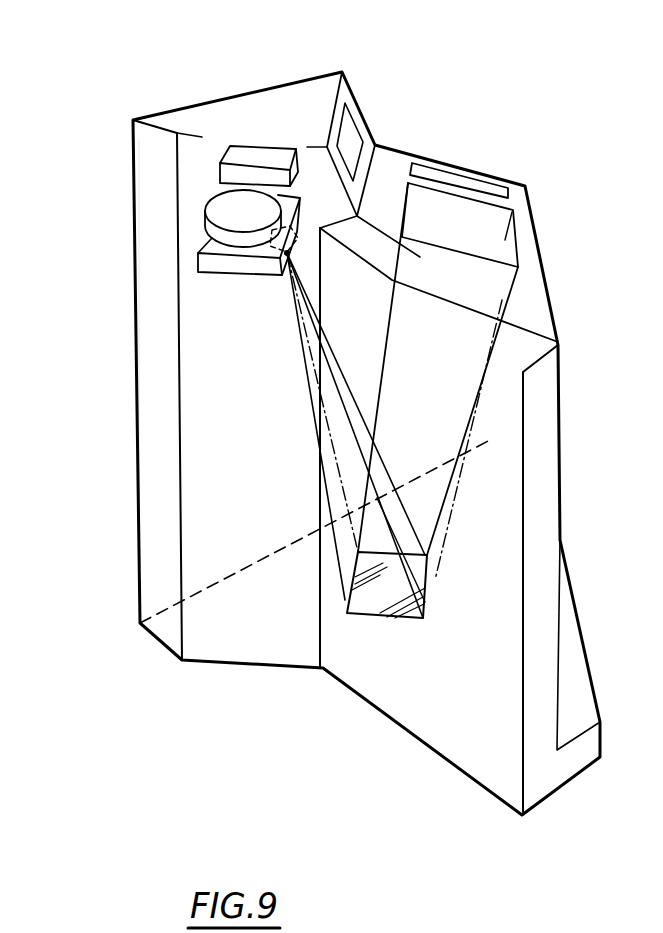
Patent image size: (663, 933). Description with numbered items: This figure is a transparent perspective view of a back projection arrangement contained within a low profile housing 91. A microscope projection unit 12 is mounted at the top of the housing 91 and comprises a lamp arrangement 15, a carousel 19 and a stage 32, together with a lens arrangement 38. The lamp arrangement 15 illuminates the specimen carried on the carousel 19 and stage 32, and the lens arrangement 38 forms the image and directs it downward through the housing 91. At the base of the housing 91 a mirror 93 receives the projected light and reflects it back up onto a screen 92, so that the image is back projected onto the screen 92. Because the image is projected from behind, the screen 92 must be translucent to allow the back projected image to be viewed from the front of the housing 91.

The microscope projection unit 12 is at (190, 169).
The lamp arrangement 15 is at (258, 152).
The carousel 19 is at (220, 216).
The stage 32 is at (223, 265).
The lens arrangement 38 is at (285, 252).
The low profile housing 91 is at (147, 522).
The screen 92 is at (465, 210).
The mirror 93 is at (368, 608).